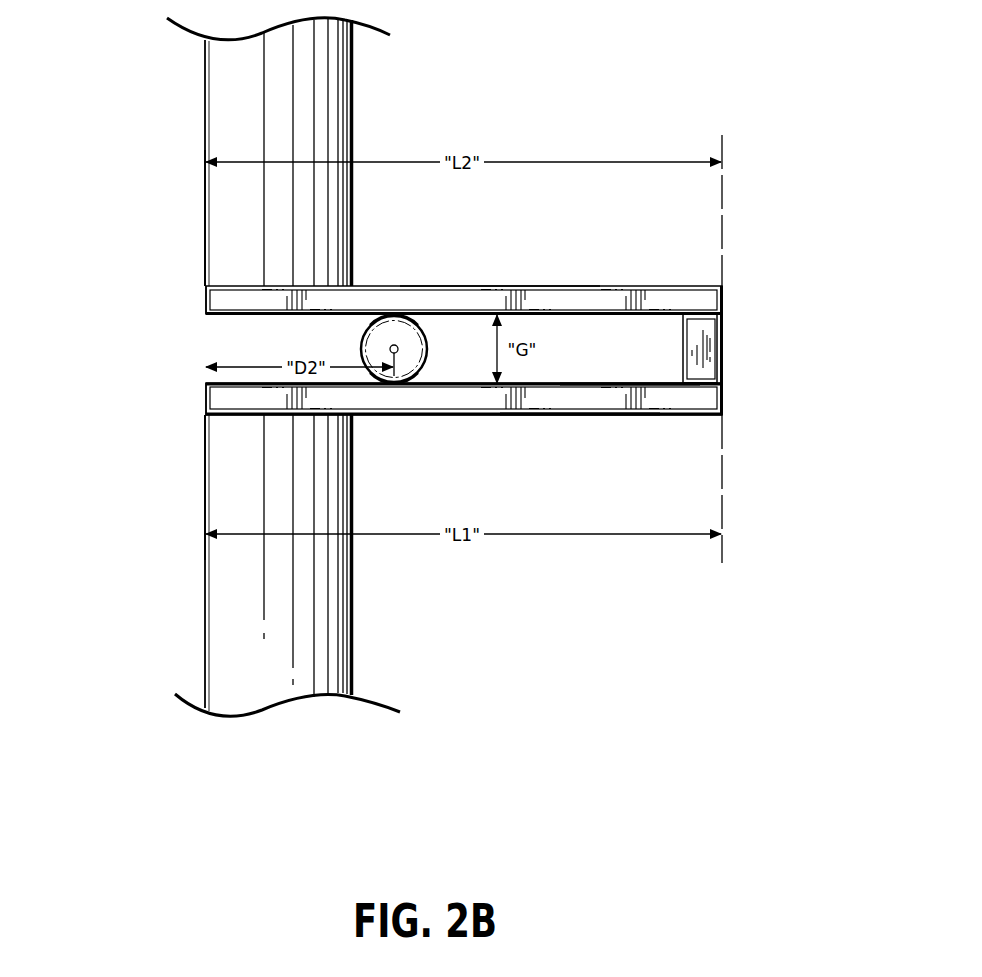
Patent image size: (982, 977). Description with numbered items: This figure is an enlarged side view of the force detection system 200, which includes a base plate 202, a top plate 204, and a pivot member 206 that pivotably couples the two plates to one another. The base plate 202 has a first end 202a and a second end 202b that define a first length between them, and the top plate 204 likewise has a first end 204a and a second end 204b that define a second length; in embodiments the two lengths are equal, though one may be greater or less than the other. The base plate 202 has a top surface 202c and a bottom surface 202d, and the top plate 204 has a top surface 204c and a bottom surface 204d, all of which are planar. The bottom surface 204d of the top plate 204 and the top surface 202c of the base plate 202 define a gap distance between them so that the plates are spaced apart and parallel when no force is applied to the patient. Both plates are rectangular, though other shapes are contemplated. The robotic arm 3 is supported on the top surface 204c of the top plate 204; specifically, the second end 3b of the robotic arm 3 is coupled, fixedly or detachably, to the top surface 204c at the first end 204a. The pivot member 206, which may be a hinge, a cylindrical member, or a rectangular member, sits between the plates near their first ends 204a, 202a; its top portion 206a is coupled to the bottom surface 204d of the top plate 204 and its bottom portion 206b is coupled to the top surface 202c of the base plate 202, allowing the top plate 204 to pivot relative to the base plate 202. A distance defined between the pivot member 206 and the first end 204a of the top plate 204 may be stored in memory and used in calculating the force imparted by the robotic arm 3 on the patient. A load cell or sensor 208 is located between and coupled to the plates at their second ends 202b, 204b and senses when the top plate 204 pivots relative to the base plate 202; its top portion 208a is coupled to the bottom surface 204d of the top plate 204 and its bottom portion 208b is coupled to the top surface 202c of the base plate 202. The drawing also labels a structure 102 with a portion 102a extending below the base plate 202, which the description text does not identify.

The robotic arm 3 is at (363, 63).
The second end of robotic arm 3b is at (205, 270).
The pipe section 102 is at (383, 628).
The pipe section outer surface 102a is at (205, 420).
The force detection system 200 is at (808, 323).
The base plate 202 is at (508, 415).
The first end of base plate 202a is at (205, 400).
The second end of base plate 202b is at (725, 395).
The top surface of base plate 202c is at (615, 383).
The bottom surface of base plate 202d is at (567, 415).
The top plate 204 is at (545, 296).
The first end of top plate 204a is at (205, 293).
The second end of top plate 204b is at (722, 292).
The top surface of top plate 204c is at (503, 285).
The bottom surface of top plate 204d is at (565, 314).
The pivot member 206 is at (398, 346).
The top portion of pivot member 206a is at (396, 318).
The bottom portion of pivot member 206b is at (396, 383).
The load cell or sensor 208 is at (715, 352).
The top portion of sensor 208a is at (705, 313).
The bottom portion of sensor 208b is at (703, 383).